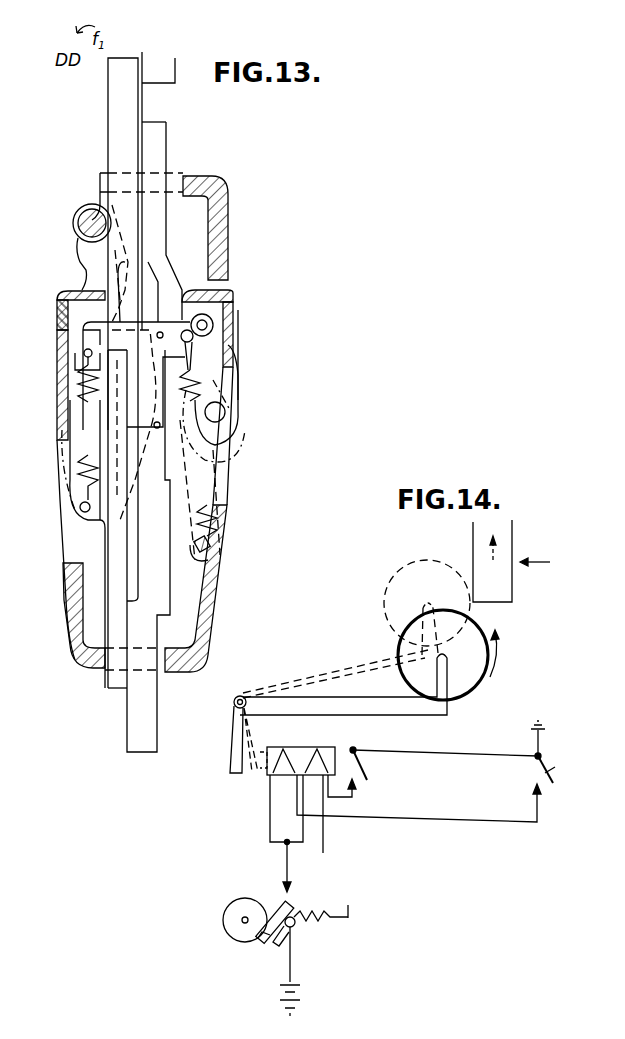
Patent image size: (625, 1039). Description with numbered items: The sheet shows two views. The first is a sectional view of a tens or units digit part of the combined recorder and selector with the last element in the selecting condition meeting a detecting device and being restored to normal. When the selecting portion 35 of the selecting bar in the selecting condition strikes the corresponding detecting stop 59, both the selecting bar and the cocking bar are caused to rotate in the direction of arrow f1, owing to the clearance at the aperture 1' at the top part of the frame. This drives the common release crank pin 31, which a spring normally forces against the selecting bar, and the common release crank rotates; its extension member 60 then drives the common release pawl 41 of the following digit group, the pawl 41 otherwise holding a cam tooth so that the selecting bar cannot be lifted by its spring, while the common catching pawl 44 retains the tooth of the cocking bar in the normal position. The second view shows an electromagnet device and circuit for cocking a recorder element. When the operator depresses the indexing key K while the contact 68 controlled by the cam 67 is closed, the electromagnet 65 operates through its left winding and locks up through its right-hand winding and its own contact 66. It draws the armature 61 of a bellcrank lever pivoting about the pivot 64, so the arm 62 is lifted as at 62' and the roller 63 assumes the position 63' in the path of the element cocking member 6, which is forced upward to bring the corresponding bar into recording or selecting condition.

In FIG. 13, the selecting portion 35 is at (125, 92).
In FIG. 13, the detecting stop 59 is at (163, 76).
In FIG. 13, the aperture 1' is at (131, 172).
In FIG. 13, the common release crank pin 31 is at (78, 227).
In FIG. 13, the extension member 60 is at (80, 316).
In FIG. 13, the common release pawl 41 is at (57, 350).
In FIG. 13, the armature 61 is at (183, 310).
In FIG. 14, the armature 61 is at (227, 739).
In FIG. 13, the common catching pawl 44 is at (232, 355).
In FIG. 14, the element cocking member 6 is at (515, 561).
In FIG. 14, the roller lifted position 63' is at (427, 596).
In FIG. 14, the roller 63 is at (448, 662).
In FIG. 14, the arm 62 is at (343, 696).
In FIG. 14, the arm lifted position 62' is at (335, 674).
In FIG. 14, the pivot 64 is at (234, 701).
In FIG. 14, the electromagnet 65 is at (404, 819).
In FIG. 14, the own contact 66 is at (433, 772).
In FIG. 14, the indexing key K is at (546, 752).
In FIG. 14, the cam 67 is at (235, 928).
In FIG. 14, the contact 68 is at (275, 897).